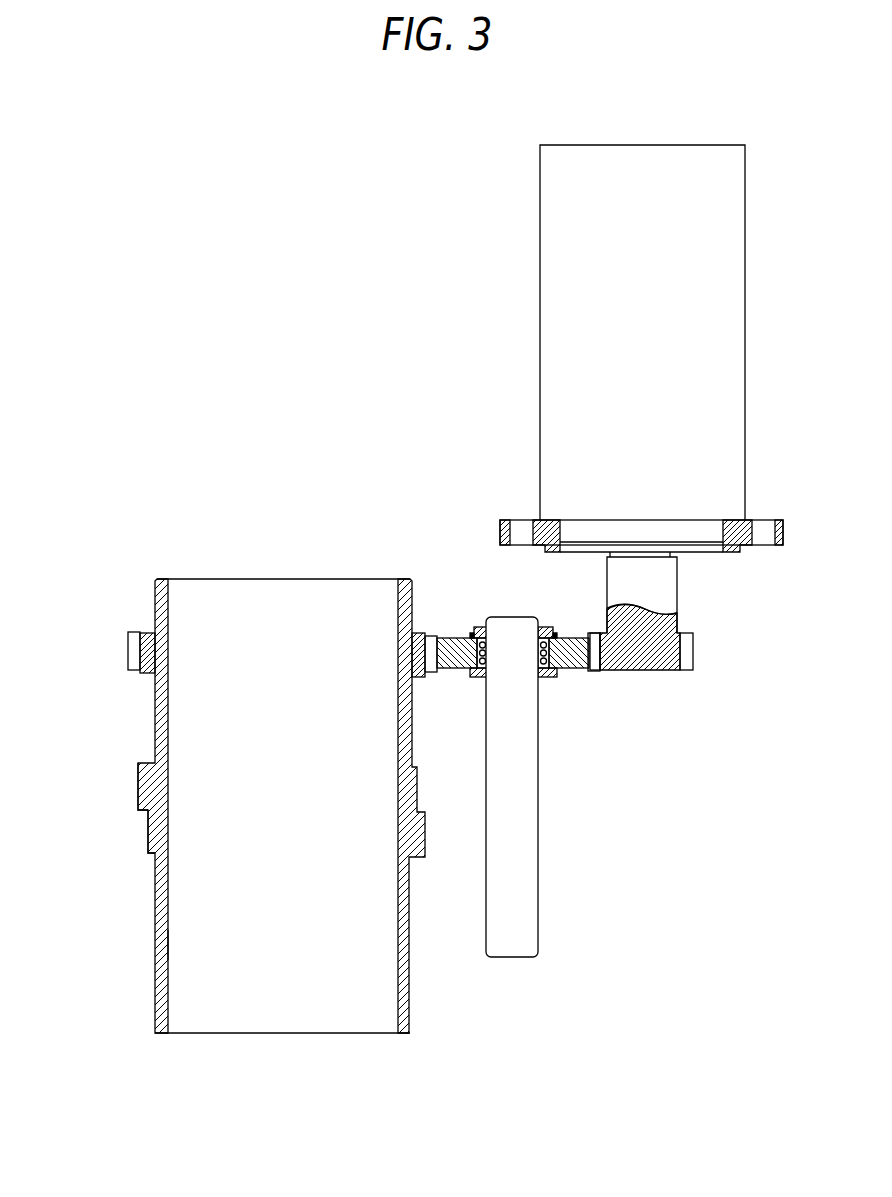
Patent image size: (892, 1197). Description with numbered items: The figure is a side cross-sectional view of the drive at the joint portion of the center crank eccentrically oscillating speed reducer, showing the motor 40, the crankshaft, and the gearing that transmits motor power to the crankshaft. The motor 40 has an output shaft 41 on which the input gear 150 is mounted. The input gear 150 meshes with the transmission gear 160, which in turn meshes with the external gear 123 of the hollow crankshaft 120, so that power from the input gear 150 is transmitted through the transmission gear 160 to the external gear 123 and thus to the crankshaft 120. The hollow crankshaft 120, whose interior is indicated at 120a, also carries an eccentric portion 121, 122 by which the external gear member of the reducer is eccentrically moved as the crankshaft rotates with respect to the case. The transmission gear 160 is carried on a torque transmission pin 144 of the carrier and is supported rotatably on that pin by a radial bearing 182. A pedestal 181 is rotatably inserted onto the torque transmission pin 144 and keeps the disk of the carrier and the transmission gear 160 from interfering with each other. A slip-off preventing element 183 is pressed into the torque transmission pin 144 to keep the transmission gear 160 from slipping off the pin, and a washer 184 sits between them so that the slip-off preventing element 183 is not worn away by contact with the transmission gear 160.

The motor 40 is at (546, 233).
The output shaft 41 is at (678, 559).
The hollow crankshaft 120 is at (279, 592).
The inner surface of cylindrical member 120a is at (169, 944).
The eccentric portion 121 is at (140, 789).
The eccentric portion 122 is at (148, 836).
The external gear 123 is at (131, 652).
The torque transmission pin 144 is at (525, 897).
The input gear 150 is at (694, 647).
The transmission gear 160 is at (458, 661).
The pedestal 181 is at (558, 677).
The radial bearing 182 is at (477, 626).
The slip-off preventing element 183 is at (545, 626).
The washer 184 is at (472, 630).